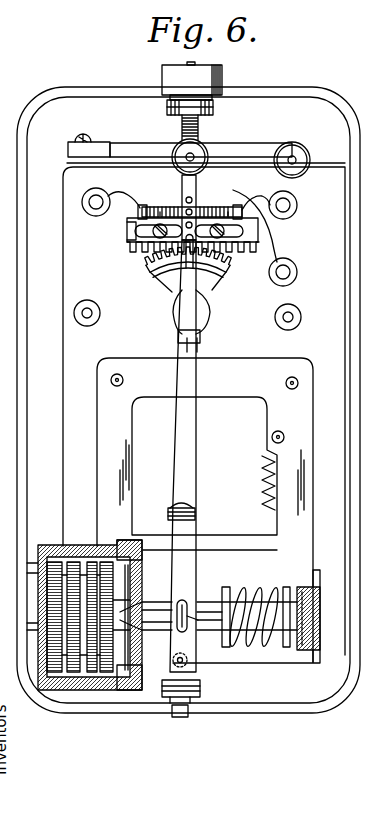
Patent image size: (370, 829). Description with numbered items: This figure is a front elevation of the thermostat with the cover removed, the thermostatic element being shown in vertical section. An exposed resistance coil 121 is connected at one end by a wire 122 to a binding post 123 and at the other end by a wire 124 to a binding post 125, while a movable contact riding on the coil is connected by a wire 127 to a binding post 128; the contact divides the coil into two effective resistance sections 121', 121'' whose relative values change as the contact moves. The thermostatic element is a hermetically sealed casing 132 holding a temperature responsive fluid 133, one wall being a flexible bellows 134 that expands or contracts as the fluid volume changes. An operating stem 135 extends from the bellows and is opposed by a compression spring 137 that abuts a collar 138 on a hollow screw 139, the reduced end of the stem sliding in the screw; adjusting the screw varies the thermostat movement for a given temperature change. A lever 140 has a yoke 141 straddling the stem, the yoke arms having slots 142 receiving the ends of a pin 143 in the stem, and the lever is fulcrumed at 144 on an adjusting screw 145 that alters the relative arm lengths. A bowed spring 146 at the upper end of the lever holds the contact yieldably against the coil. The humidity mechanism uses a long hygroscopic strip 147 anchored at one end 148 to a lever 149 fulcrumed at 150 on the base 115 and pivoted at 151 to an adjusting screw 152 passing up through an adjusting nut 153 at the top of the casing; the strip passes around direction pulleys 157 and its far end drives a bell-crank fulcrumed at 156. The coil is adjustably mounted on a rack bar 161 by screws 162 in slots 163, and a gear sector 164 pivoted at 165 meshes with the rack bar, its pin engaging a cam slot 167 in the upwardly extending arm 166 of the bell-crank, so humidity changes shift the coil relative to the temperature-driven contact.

The base 115 is at (289, 96).
The electric resistance element 121 is at (175, 211).
The effective resistance section 121' is at (165, 197).
The effective resistance section 121'' is at (229, 193).
The wire 122 is at (111, 194).
The binding post 123 is at (126, 228).
The wire 124 is at (258, 200).
The binding post 125 is at (290, 203).
The wire 127 is at (276, 258).
The binding post 128 is at (293, 272).
The hermetically sealed casing 132 is at (95, 690).
The temperature responsive fluid 133 is at (53, 690).
The flexible diaphragm or bellows 134 is at (90, 560).
The operating stem 135 is at (150, 601).
The compression spring 137 is at (246, 612).
The collar 138 is at (295, 604).
The screw 139 is at (292, 640).
The lever 140 is at (185, 488).
The yoke 141 is at (191, 526).
The slot 142 is at (186, 602).
The pin 143 is at (190, 624).
The fulcrum 144 is at (187, 662).
The adjusting screw 145 is at (181, 708).
The bowed spring 146 is at (196, 186).
The hygroscopic strip 147 is at (63, 418).
The anchored end 148 is at (105, 146).
The lever 149 is at (155, 141).
The fulcrum 150 is at (293, 157).
The pivot 151 is at (194, 154).
The adjusting screw 152 is at (198, 132).
The adjusting nut 153 is at (222, 70).
The fulcrum 156 is at (247, 630).
The direction pulley 157 is at (115, 366).
The rack bar 161 is at (132, 240).
The screw 162 is at (158, 236).
The slot 163 is at (241, 232).
The gear sector 164 is at (172, 258).
The pivot 165 is at (178, 335).
The upwardly extending arm 166 is at (198, 346).
The cam slot 167 is at (205, 310).